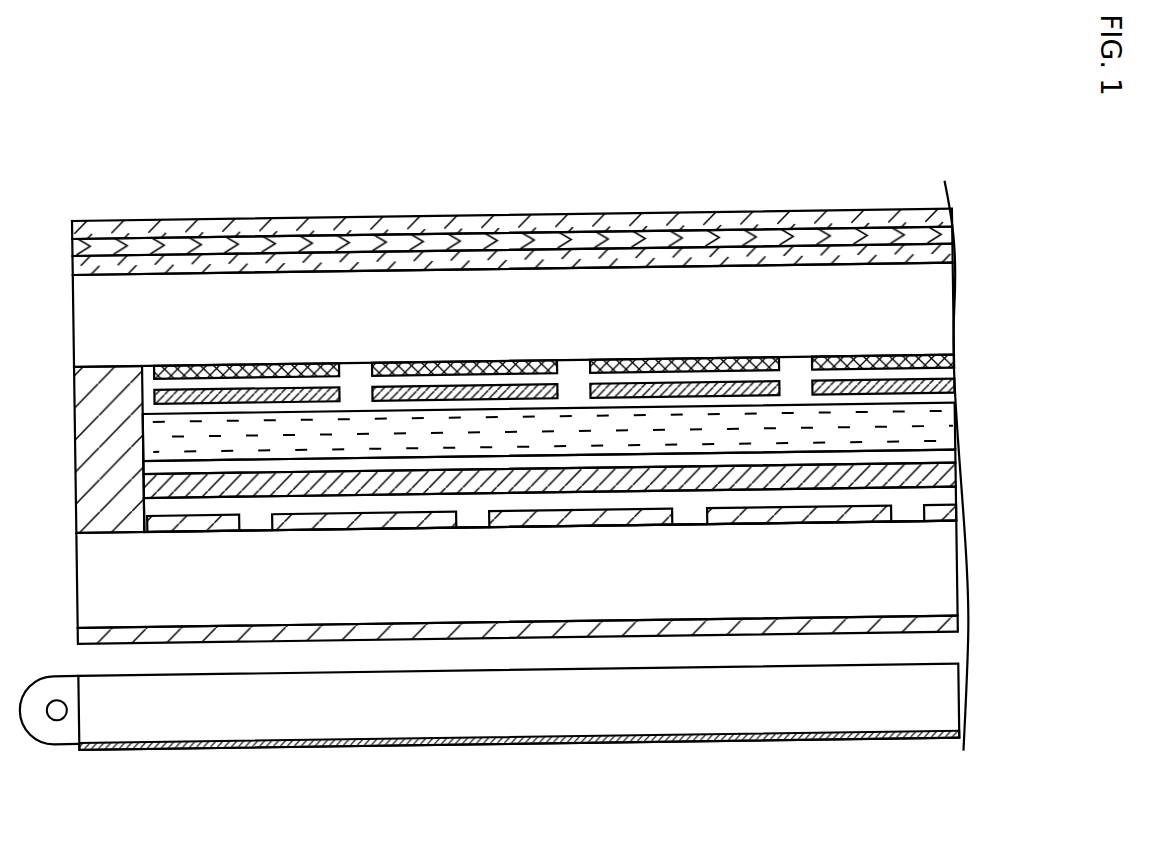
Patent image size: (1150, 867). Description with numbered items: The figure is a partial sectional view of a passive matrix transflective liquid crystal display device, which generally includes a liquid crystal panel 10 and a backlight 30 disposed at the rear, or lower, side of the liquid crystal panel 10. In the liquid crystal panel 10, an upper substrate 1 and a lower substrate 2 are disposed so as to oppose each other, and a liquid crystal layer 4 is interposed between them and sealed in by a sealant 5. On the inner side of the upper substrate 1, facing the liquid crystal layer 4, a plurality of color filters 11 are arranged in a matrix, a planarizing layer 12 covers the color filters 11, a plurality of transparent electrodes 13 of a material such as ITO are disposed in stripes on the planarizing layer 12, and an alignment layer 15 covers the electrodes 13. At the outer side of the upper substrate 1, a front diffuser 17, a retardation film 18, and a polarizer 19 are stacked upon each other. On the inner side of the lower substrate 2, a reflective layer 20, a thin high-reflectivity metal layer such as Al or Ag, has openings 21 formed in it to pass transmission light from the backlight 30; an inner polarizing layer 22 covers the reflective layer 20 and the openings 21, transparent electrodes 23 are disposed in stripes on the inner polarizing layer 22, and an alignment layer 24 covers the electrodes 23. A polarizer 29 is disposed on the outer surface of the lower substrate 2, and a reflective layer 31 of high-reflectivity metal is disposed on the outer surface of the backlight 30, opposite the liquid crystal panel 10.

The upper substrate 1 is at (942, 302).
The lower substrate 2 is at (950, 580).
The liquid crystal layer 4 is at (946, 427).
The sealant 5 is at (105, 382).
The liquid crystal panel 10 is at (915, 204).
The color filters 11 is at (185, 365).
The planarizing layer 12 is at (606, 275).
The electrodes 13 is at (268, 388).
The alignment layer 15 is at (606, 288).
The front diffuser 17 is at (955, 268).
The retardation film 18 is at (952, 244).
The polarizer 19 is at (948, 216).
The reflective layer 20 is at (174, 524).
The openings 21 is at (268, 524).
The inner polarizing layer 22 is at (948, 513).
The electrodes 23 is at (948, 483).
The alignment layer 24 is at (947, 457).
The polarizer 29 is at (952, 624).
The backlight 30 is at (952, 705).
The reflective layer 31 is at (930, 742).